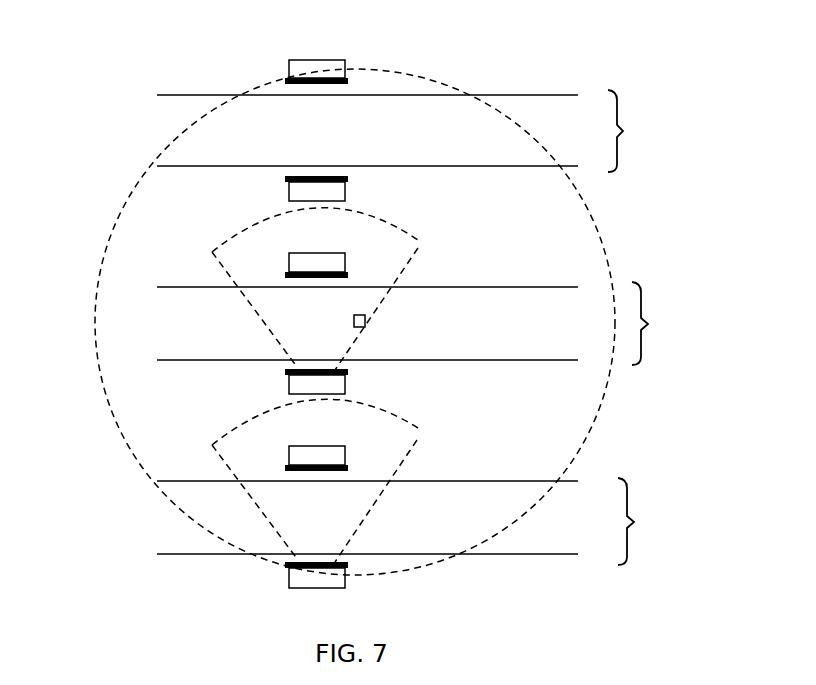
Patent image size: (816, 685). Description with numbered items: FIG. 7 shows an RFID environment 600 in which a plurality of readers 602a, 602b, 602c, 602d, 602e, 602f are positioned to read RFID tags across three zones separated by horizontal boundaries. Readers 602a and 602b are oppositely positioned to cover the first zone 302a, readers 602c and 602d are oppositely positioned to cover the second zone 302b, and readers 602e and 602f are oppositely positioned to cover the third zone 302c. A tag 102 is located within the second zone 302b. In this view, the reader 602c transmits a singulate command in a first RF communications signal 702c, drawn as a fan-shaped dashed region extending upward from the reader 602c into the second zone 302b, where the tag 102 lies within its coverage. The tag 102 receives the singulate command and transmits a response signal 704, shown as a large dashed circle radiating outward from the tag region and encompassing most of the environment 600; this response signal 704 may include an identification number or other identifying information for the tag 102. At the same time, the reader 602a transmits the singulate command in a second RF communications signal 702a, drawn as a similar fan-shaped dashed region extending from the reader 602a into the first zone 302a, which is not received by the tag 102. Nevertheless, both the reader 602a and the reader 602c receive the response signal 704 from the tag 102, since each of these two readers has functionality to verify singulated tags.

The RFID environment 600 is at (624, 61).
The response signal 704 is at (118, 223).
The second RF communications signal 702a is at (410, 451).
The first RF communications signal 702c is at (412, 257).
The reader 602a is at (345, 583).
The reader 602b is at (345, 456).
The reader 602c is at (345, 380).
The reader 602d is at (345, 263).
The reader 602e is at (345, 188).
The reader 602f is at (345, 64).
The first zone 302a is at (654, 521).
The second zone 302b is at (666, 323).
The third zone 302c is at (641, 131).
The tag 102 is at (365, 322).